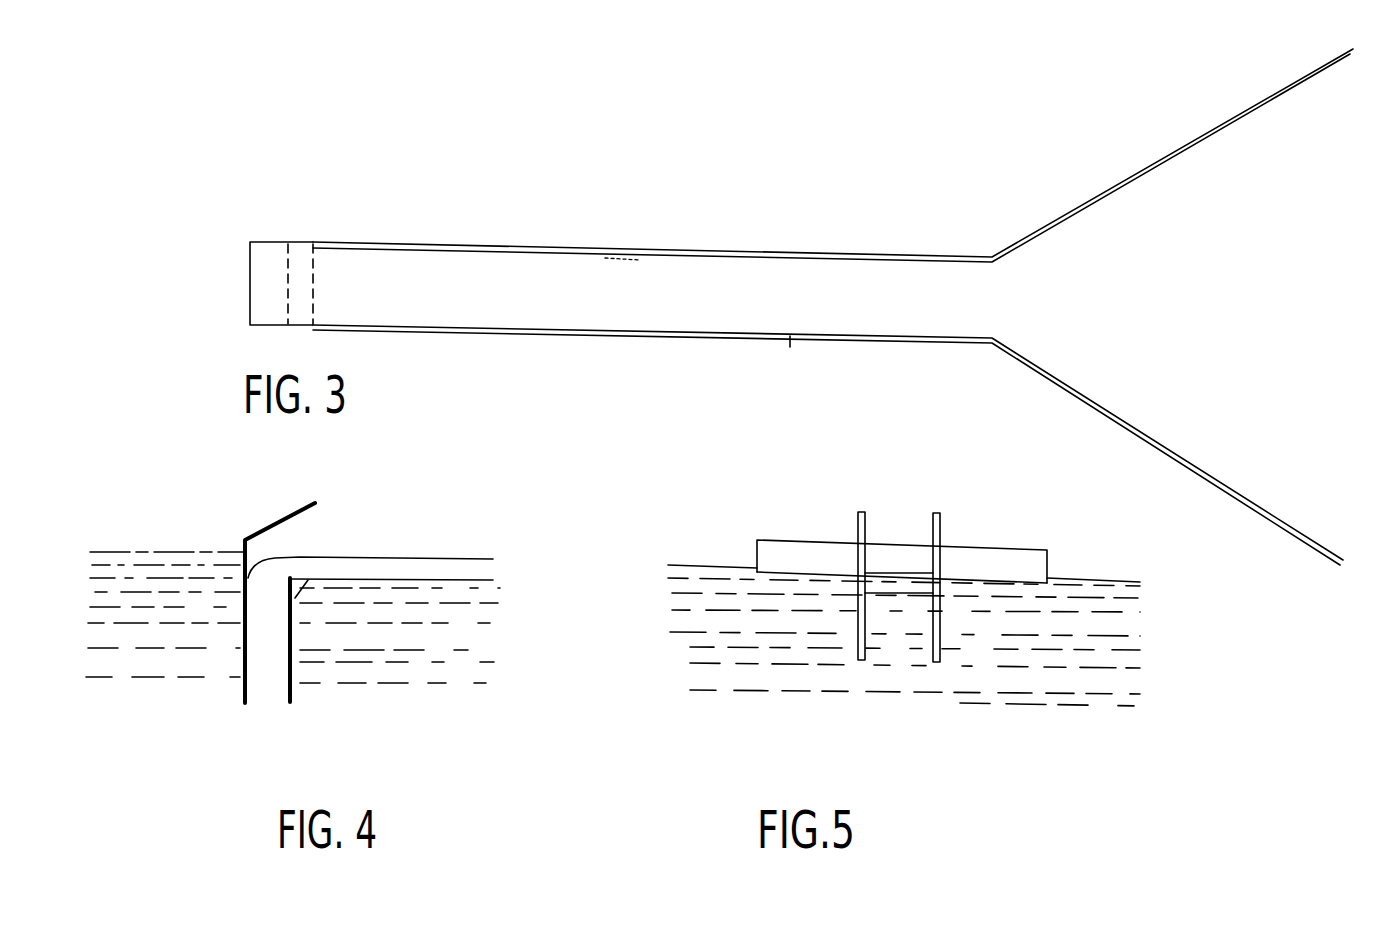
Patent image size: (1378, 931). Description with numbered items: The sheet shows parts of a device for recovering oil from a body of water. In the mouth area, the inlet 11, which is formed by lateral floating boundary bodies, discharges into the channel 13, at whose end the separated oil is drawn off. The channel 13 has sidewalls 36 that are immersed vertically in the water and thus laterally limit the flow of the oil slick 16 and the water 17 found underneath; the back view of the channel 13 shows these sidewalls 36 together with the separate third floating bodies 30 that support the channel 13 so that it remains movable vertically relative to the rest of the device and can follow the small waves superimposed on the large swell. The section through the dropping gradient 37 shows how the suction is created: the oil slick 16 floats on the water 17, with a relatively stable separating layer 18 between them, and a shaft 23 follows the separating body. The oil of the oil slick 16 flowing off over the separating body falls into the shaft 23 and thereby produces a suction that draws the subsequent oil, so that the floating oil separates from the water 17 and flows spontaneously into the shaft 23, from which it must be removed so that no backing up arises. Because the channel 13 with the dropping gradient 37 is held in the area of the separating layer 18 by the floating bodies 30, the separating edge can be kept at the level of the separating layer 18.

In FIG. 3, the inlet 11 is at (1234, 320).
In FIG. 3, the channel 13 is at (598, 295).
In FIG. 5, the channel 13 is at (903, 557).
In FIG. 4, the oil slick 16 is at (430, 573).
In FIG. 4, the water 17 is at (393, 637).
In FIG. 4, the separating layer 18 is at (447, 580).
In FIG. 3, the shaft 23 is at (273, 296).
In FIG. 4, the shaft 23 is at (257, 655).
In FIG. 5, the third floating bodies 30 is at (787, 558).
In FIG. 3, the sidewalls 36 is at (857, 258).
In FIG. 5, the sidewalls 36 is at (938, 512).
In FIG. 3, the dropping gradient 37 is at (306, 282).
In FIG. 4, the dropping gradient 37 is at (286, 565).